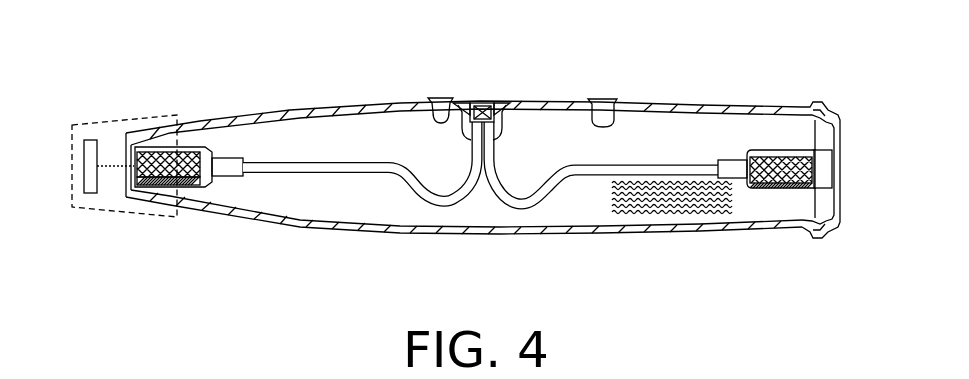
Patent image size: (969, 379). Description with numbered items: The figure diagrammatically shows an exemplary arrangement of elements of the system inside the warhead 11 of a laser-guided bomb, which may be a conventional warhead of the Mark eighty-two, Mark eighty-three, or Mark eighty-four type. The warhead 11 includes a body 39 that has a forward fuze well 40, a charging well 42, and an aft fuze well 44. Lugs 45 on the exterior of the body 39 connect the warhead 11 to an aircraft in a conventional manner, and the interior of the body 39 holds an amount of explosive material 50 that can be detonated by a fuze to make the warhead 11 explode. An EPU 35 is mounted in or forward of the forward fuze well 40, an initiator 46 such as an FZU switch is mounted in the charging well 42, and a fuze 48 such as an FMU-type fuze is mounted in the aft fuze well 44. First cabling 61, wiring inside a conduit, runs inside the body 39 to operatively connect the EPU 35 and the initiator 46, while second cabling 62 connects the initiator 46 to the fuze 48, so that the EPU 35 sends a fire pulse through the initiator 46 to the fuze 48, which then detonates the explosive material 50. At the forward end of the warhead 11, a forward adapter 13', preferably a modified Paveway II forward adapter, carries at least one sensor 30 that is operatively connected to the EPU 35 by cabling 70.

The warhead 11 is at (758, 42).
The forward adapter 13' is at (124, 209).
The sensor 30 is at (92, 140).
The EPU 35 is at (160, 147).
The body 39 is at (722, 108).
The forward fuze well 40 is at (192, 190).
The charging well 42 is at (495, 103).
The aft fuze well 44 is at (772, 188).
The lugs 45 is at (440, 98).
The initiator 46 is at (482, 100).
The fuze 48 is at (772, 152).
The explosive material 50 is at (668, 198).
The first cabling 61 is at (311, 170).
The second cabling 62 is at (543, 187).
The cabling 70 is at (110, 165).